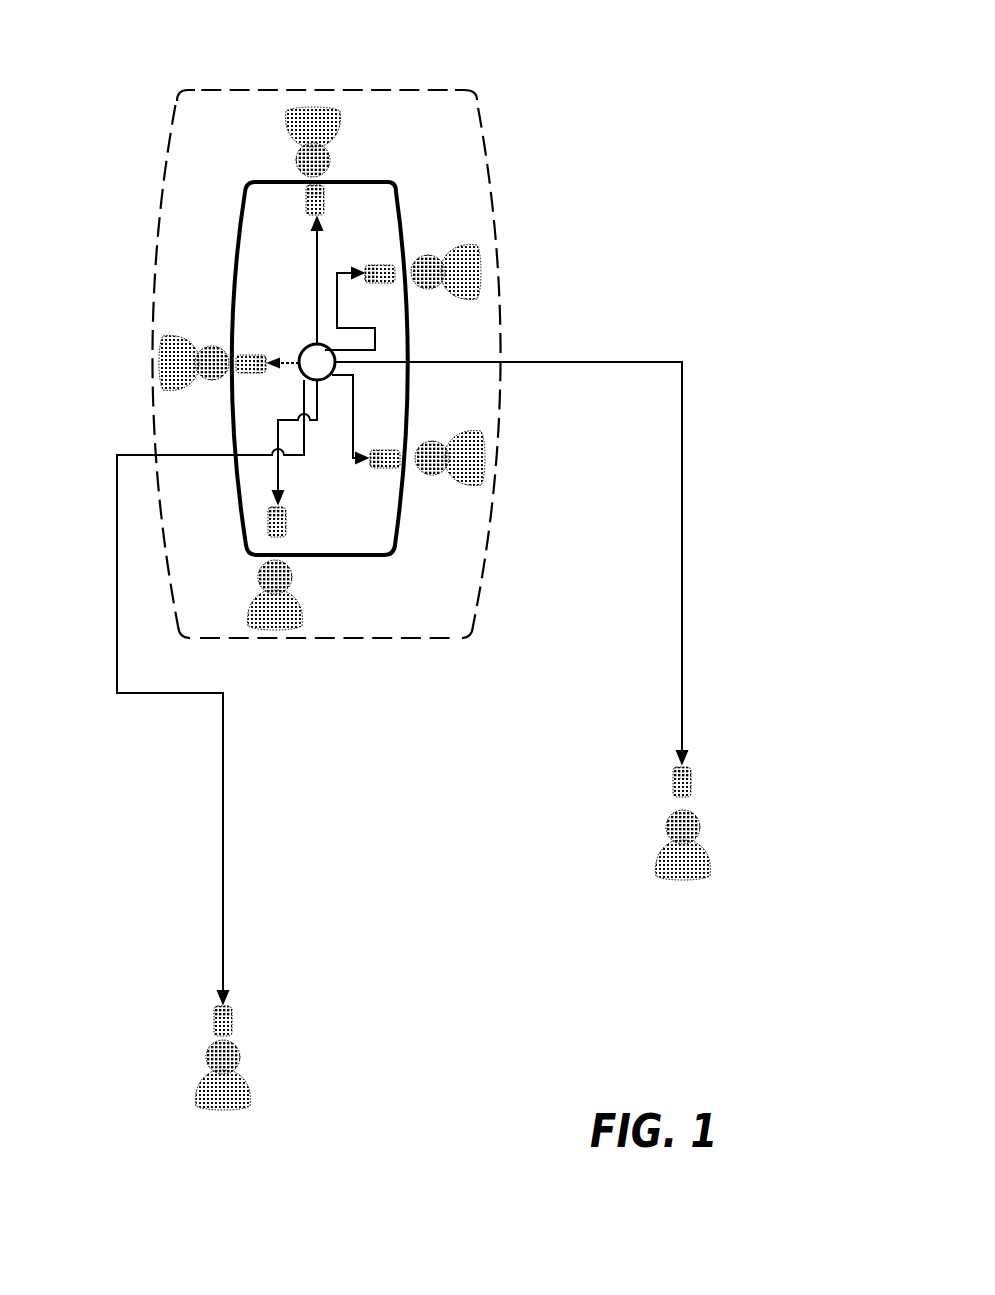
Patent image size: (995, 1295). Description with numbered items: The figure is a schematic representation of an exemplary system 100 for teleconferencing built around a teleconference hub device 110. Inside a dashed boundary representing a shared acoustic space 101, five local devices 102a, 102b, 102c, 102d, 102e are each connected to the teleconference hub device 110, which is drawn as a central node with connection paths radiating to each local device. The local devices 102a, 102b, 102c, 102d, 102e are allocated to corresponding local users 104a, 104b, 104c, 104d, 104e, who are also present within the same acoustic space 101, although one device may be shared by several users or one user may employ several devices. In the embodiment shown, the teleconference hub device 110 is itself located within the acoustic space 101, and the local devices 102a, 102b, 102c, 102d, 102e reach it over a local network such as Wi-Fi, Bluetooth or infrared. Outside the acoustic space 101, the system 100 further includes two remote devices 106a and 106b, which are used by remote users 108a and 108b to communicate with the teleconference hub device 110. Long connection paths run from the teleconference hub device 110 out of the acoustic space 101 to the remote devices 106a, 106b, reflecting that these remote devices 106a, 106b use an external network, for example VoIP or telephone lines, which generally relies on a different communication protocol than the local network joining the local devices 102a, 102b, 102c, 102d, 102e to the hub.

The system 100 is at (607, 107).
The acoustic space 101 is at (443, 115).
The teleconference hub device 110 is at (318, 360).
The local device 102a is at (390, 266).
The local device 102b is at (400, 474).
The local device 102c is at (285, 537).
The local device 102d is at (236, 357).
The local device 102e is at (304, 203).
The user 104a is at (458, 277).
The user 104b is at (467, 457).
The user 104c is at (275, 615).
The user 104d is at (180, 377).
The user 104e is at (322, 130).
The remote device 106a is at (690, 780).
The remote device 106b is at (230, 1022).
The user 108a is at (697, 855).
The user 108b is at (245, 1095).